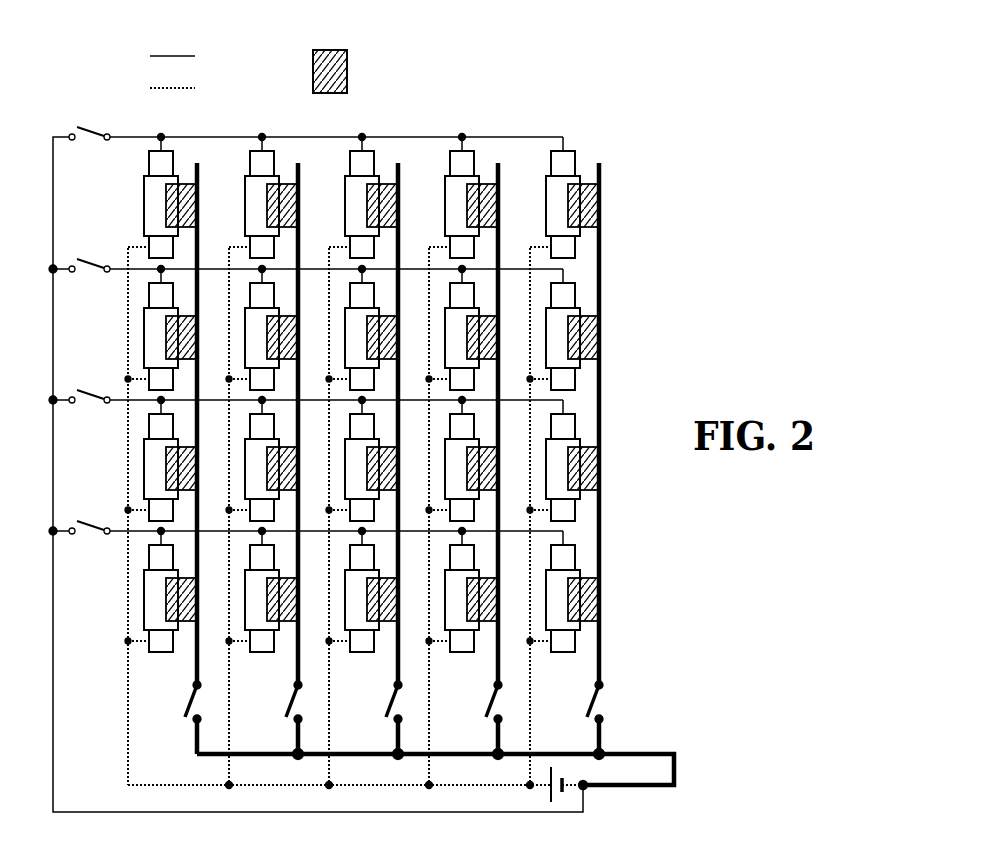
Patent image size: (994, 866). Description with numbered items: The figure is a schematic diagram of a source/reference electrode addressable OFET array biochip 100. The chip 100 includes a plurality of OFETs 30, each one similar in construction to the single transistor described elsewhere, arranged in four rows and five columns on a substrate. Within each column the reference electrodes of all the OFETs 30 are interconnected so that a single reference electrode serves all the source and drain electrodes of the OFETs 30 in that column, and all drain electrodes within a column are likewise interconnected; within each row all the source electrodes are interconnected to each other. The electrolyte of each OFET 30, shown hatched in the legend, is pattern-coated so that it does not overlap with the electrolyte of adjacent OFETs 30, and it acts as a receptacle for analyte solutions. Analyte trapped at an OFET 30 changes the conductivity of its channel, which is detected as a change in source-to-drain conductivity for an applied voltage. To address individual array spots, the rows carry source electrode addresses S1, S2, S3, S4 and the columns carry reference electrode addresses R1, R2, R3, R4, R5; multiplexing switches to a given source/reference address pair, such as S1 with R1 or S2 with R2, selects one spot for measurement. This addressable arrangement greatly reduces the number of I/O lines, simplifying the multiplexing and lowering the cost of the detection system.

The OFET array biochip 100 is at (363, 406).
The OFET 30 is at (584, 151).
The source electrode address S1 is at (316, 543).
The source electrode address S2 is at (316, 412).
The source electrode address S3 is at (316, 281).
The source electrode address S4 is at (316, 149).
The reference electrode address R1 is at (164, 474).
The reference electrode address R2 is at (265, 476).
The reference electrode address R3 is at (365, 476).
The reference electrode address R4 is at (465, 476).
The reference electrode address R5 is at (566, 476).